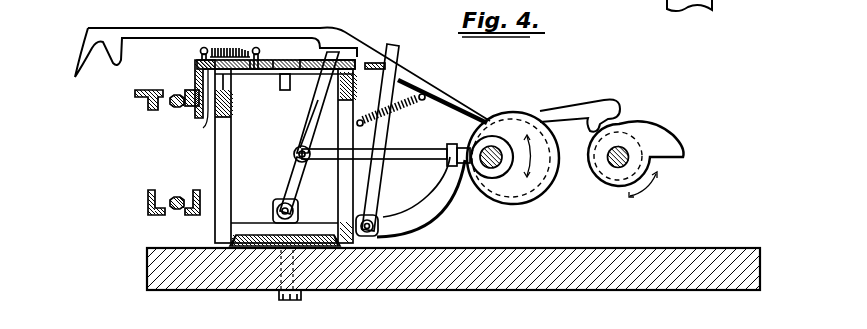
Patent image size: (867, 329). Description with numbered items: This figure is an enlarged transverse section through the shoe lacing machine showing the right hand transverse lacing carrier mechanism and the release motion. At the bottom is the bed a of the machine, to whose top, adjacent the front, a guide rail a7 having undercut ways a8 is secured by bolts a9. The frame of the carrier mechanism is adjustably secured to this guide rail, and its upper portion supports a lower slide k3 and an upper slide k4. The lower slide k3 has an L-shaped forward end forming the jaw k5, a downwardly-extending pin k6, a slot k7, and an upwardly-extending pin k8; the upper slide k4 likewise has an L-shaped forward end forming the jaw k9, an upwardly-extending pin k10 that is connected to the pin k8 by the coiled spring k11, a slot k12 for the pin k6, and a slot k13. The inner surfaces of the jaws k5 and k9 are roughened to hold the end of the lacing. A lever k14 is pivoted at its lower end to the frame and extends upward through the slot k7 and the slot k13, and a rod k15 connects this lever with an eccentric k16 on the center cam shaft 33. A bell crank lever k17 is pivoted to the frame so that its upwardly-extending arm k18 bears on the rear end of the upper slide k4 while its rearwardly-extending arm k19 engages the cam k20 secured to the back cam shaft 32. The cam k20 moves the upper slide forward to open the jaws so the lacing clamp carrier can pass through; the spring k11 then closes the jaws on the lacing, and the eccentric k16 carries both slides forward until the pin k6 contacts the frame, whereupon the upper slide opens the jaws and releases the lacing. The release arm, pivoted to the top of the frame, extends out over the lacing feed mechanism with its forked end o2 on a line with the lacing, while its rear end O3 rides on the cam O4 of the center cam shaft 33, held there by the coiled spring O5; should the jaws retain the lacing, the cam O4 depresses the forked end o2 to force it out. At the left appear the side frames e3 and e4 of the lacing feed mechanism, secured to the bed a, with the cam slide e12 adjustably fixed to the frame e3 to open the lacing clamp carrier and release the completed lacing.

The bed a is at (667, 262).
The guide rail a7 is at (263, 246).
The undercut ways a8 is at (235, 247).
The bolts a9 is at (286, 300).
The lower slide k3 is at (274, 72).
The upper slide k4 is at (301, 62).
The jaw k5 is at (205, 113).
The downwardly-extending pin k6 is at (290, 75).
The slot k7 is at (318, 62).
The upwardly-extending pin k8 is at (256, 50).
The jaw k9 is at (196, 80).
The upwardly-extending pin k10 is at (200, 50).
The coiled spring k11 is at (227, 48).
The slot k12 is at (264, 62).
The slot k13 is at (363, 58).
The lever k14 is at (289, 178).
The rod k15 is at (409, 162).
The eccentric k16 is at (548, 187).
The bell crank lever k17 is at (433, 193).
The upwardly-extending arm k18 is at (395, 43).
The rearwardly-extending arm k19 is at (592, 114).
The cam k20 is at (664, 131).
The forked end o2 is at (88, 50).
The rear end O3 is at (458, 108).
The cam O4 is at (545, 173).
The coiled spring O5 is at (391, 117).
The side frame e3 is at (147, 204).
The side frame e4 is at (192, 215).
The cam slide e12 is at (134, 95).
The back cam shaft 32 is at (614, 169).
The center cam shaft 33 is at (495, 148).